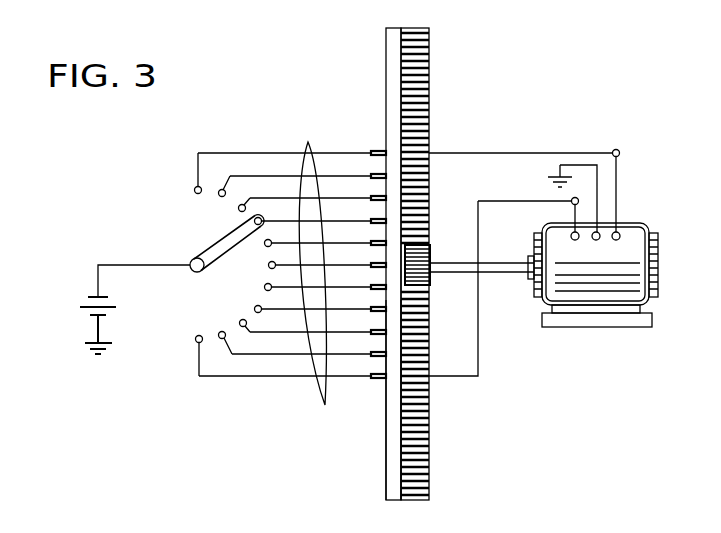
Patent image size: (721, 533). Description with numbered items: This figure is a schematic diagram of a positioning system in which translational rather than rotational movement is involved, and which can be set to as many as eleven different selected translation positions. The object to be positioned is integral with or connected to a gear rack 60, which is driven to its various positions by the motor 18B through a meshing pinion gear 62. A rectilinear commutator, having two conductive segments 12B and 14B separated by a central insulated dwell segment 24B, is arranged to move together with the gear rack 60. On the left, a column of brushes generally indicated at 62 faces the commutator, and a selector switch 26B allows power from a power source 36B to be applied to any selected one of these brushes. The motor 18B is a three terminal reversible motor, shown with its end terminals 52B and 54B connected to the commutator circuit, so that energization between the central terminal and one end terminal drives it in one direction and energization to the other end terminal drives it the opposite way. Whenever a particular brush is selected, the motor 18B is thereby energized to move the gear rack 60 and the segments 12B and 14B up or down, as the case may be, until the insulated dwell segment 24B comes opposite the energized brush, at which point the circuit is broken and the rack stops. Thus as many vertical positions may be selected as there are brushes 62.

The commutator segment 12B is at (387, 74).
The commutator segment 14B is at (390, 451).
The gear rack 60 is at (430, 420).
The pinion gear / brushes 62 is at (427, 250).
The central insulated dwell segment 24B is at (394, 268).
The motor 18B is at (598, 292).
The end terminal 52B is at (619, 151).
The end terminal 54B is at (575, 204).
The selector switch 26B is at (222, 244).
The power source 36B is at (95, 296).